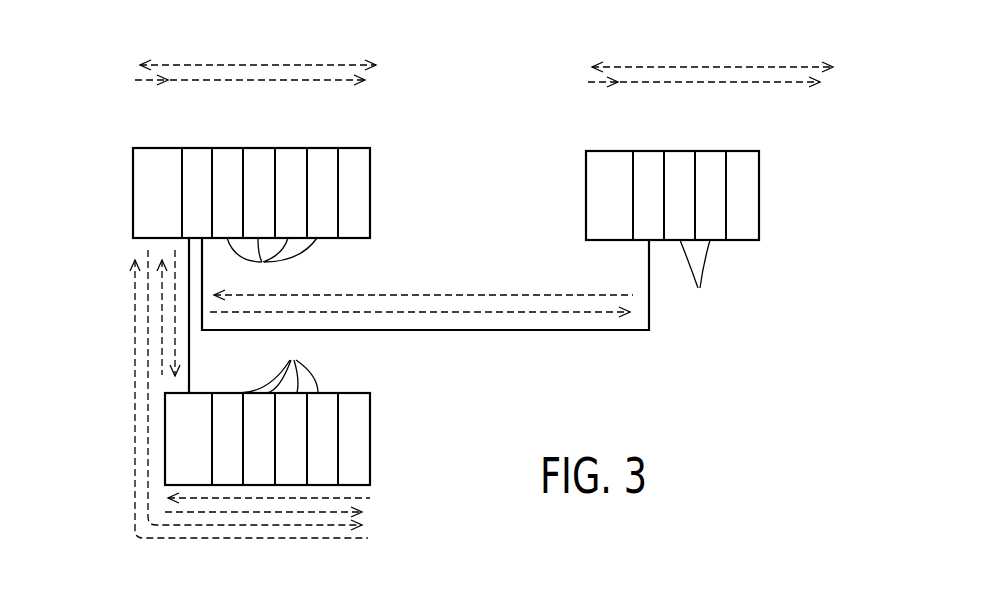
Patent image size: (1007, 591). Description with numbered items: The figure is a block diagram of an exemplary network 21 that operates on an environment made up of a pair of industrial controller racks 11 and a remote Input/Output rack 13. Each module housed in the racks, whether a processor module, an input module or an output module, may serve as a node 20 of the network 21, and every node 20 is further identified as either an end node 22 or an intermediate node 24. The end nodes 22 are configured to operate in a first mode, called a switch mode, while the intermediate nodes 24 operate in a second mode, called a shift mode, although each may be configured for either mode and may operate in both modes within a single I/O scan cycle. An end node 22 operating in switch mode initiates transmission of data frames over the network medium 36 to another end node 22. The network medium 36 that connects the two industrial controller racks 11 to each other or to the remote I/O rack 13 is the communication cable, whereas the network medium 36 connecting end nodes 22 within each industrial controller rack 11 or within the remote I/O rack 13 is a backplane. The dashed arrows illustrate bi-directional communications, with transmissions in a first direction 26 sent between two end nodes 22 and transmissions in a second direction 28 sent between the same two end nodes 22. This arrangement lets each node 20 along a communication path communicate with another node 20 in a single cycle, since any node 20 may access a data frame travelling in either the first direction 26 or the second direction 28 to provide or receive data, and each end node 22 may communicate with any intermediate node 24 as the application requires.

The industrial controller rack 11 is at (400, 190).
The remote Input/Output rack 13 is at (405, 421).
The node 20 is at (282, 135).
The network 21 is at (103, 108).
The end node 22 is at (193, 148).
The intermediate node 24 is at (472, 315).
The first direction 26 is at (166, 80).
The second direction 28 is at (222, 65).
The network medium 36 is at (192, 330).